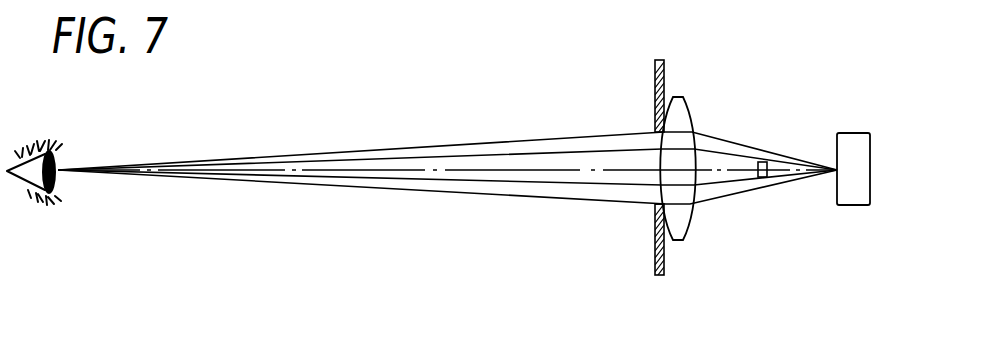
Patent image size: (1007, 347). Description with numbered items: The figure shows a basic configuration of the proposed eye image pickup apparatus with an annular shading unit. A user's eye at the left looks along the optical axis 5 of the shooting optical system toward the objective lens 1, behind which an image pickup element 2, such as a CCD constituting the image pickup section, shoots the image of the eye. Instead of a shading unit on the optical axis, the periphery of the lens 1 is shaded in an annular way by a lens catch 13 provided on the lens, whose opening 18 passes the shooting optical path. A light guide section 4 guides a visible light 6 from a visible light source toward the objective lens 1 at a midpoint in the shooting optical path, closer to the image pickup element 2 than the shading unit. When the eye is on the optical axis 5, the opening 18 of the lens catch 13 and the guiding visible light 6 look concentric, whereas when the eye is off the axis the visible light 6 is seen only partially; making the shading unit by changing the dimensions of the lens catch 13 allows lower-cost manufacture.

The objective lens 1 is at (685, 227).
The image pickup element 2 is at (853, 133).
The light guide section 4 is at (763, 163).
The optical axis 5 is at (418, 166).
The visible light 6 is at (492, 156).
The lens catch 13 is at (652, 252).
The opening of the lens catch 18 is at (646, 206).